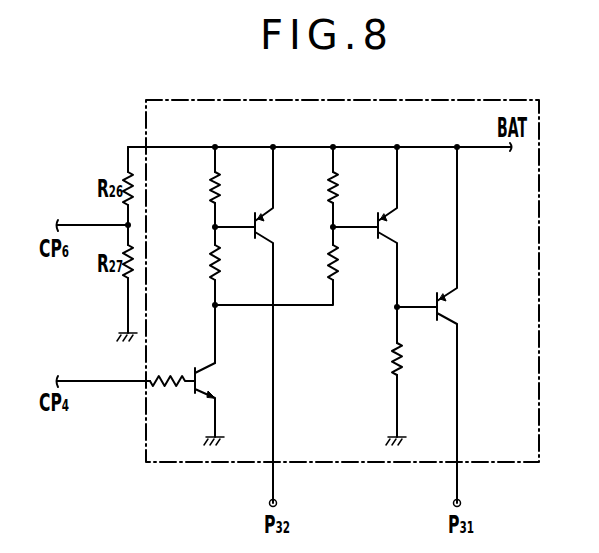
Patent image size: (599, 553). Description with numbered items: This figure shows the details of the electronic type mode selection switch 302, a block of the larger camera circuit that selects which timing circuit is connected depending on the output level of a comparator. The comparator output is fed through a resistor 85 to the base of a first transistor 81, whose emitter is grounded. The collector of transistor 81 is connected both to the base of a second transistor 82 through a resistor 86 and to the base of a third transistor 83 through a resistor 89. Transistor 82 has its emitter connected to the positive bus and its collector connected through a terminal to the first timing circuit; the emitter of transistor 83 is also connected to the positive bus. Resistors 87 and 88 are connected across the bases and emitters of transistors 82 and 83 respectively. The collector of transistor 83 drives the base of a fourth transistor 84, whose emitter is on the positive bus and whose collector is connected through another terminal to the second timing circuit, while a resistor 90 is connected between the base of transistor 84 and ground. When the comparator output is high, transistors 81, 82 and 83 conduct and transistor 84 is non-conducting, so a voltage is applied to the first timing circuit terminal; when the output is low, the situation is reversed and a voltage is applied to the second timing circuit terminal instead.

The first transistor 81 is at (205, 380).
The second transistor 82 is at (266, 228).
The third transistor 83 is at (389, 228).
The fourth transistor 84 is at (448, 308).
The resistor 85 is at (172, 366).
The resistor 86 is at (228, 266).
The resistor 87 is at (228, 187).
The resistor 88 is at (346, 187).
The resistor 89 is at (346, 253).
The resistor 90 is at (410, 372).
The electronic type mode selection switch 302 is at (201, 464).